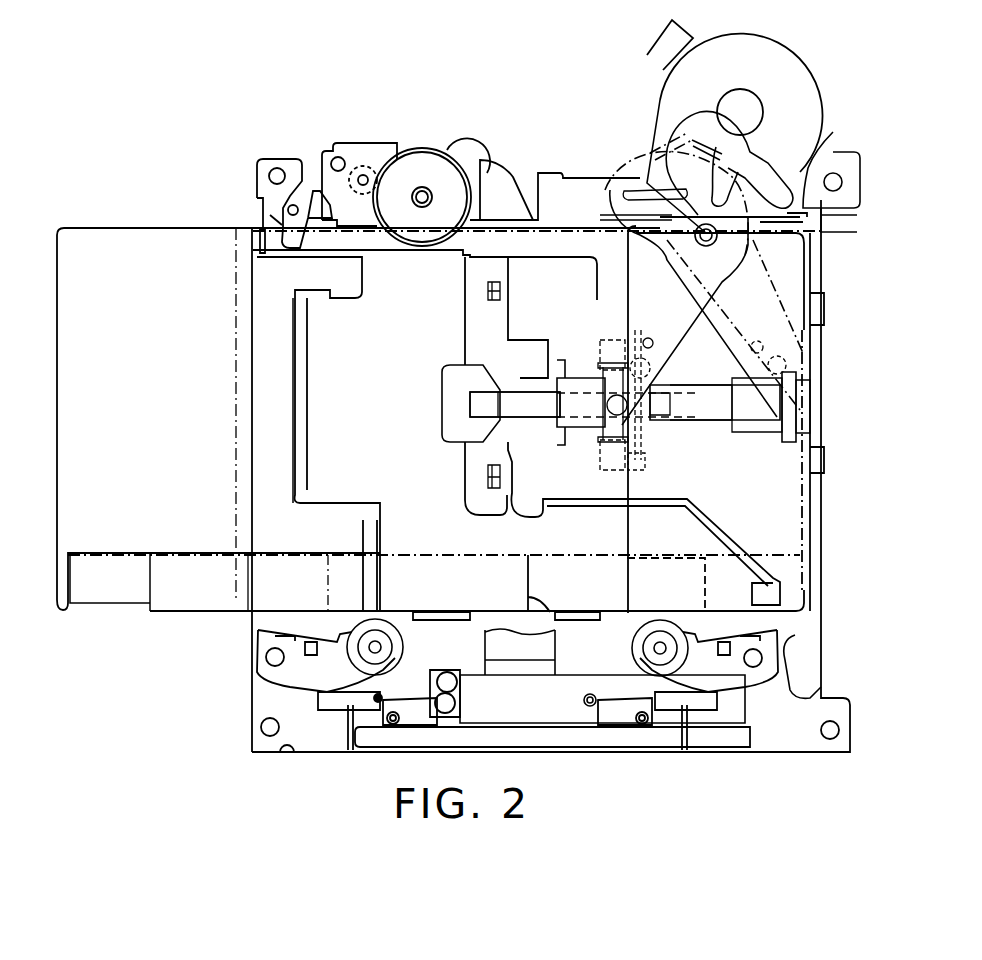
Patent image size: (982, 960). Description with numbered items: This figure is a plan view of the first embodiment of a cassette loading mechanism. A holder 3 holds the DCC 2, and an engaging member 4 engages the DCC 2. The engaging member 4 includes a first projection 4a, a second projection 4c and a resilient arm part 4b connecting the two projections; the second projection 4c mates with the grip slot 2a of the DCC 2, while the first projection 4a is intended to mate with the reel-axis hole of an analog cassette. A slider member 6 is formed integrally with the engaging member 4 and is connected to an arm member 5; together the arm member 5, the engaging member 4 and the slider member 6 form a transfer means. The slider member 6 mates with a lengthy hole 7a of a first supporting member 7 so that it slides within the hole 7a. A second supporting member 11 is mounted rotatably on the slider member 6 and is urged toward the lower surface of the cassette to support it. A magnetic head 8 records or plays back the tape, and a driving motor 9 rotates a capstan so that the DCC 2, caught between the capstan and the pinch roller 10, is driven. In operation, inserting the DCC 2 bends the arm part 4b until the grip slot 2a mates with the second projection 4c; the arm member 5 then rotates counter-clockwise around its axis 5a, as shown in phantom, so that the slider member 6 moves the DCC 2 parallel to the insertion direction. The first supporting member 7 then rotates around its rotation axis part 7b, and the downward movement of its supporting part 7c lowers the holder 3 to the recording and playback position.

The DCC 2 is at (135, 228).
The grip slot 2a is at (608, 360).
The holder 3 is at (317, 322).
The engaging member 4 is at (498, 388).
The first projection 4a is at (470, 400).
The arm part 4b is at (533, 407).
The second projection 4c is at (597, 420).
The arm member 5 is at (640, 225).
The axis 5a is at (648, 183).
The slider member 6 is at (577, 377).
The first supporting member 7 is at (530, 350).
The lengthy hole 7a is at (722, 425).
The rotation axis part 7b is at (850, 152).
The supporting part 7c is at (488, 290).
The magnetic head 8 is at (497, 650).
The driving motor 9 is at (660, 82).
The pinch roller 10 is at (398, 640).
The second supporting member 11 is at (602, 460).